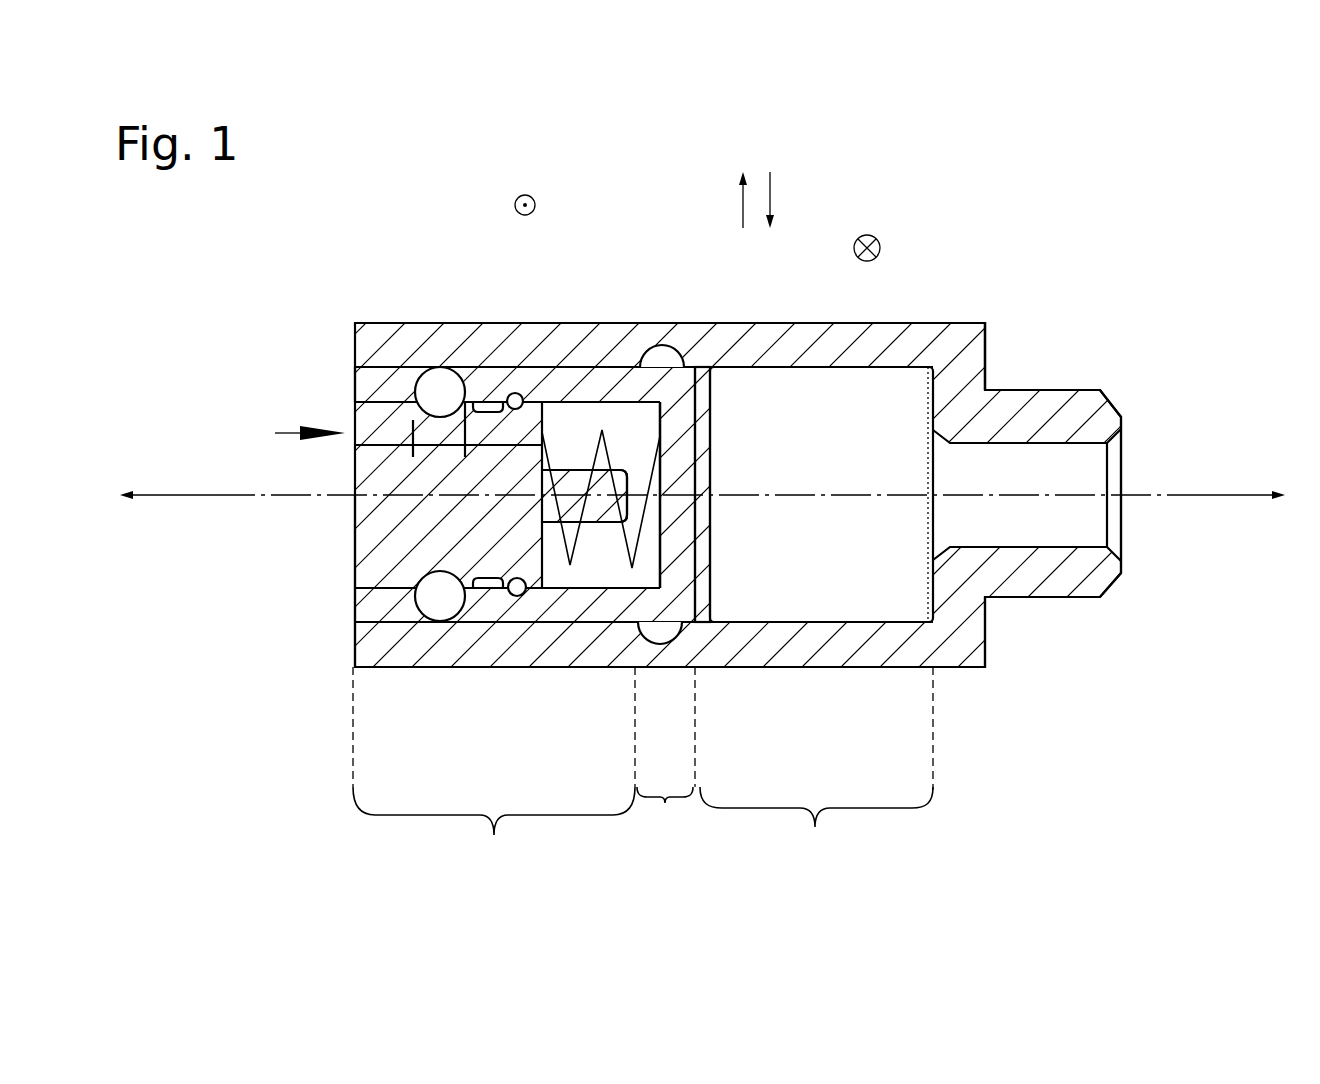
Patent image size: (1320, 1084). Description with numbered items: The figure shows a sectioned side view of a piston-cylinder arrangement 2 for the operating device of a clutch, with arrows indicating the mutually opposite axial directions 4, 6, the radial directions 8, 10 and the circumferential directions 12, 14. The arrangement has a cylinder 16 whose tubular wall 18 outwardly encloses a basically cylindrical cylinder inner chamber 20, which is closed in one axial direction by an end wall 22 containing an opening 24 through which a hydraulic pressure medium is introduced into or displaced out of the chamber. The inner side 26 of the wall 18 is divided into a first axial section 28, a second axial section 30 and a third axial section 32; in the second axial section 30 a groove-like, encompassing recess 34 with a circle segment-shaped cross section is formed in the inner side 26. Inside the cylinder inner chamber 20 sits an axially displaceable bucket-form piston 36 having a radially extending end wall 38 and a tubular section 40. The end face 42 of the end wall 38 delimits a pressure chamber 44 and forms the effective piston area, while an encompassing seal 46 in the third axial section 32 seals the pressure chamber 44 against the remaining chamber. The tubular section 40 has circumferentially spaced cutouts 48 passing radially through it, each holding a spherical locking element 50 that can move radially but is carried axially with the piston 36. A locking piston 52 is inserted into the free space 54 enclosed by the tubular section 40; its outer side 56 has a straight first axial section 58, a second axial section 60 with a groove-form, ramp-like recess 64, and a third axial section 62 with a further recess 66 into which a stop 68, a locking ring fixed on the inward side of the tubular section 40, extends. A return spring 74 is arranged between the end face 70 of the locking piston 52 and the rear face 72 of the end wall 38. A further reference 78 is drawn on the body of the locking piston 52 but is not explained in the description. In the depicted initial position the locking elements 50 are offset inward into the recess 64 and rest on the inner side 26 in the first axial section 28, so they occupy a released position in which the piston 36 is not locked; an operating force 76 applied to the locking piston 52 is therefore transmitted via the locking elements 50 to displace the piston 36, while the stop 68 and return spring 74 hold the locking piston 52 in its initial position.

The piston-cylinder arrangement 2 is at (1146, 343).
The axial direction 4 is at (1235, 495).
The axial direction 6 is at (187, 495).
The radial direction 8 is at (743, 210).
The radial direction 10 is at (770, 190).
The circumferential direction 12 is at (534, 198).
The circumferential direction 14 is at (878, 237).
The cylinder 16 is at (960, 316).
The wall 18 is at (868, 345).
The cylinder inner chamber 20 is at (882, 592).
The end wall 22 is at (955, 411).
The opening 24 is at (1056, 472).
The inner side 26 is at (764, 378).
The first axial section 28 is at (494, 772).
The second axial section 30 is at (666, 753).
The third axial section 32 is at (816, 767).
The recess 34 is at (663, 366).
The piston 36 is at (533, 632).
The end wall 38 is at (685, 467).
The tubular section 40 is at (590, 608).
The end face 42 is at (706, 462).
The pressure chamber 44 is at (872, 447).
The seal 46 is at (704, 622).
The cutouts 48 is at (465, 360).
The locking element 50 is at (440, 392).
The locking piston 52 is at (346, 586).
The free space 54 is at (590, 441).
The outer side 56 is at (382, 390).
The first axial section 58 is at (402, 470).
The second axial section 60 is at (450, 475).
The third axial section 62 is at (500, 476).
The recess 64 is at (420, 573).
The recess 66 is at (497, 401).
The stop 68 is at (516, 401).
The end face 70 is at (555, 558).
The rear face 72 is at (648, 433).
The return spring 74 is at (660, 625).
The operating force 76 is at (275, 432).
The piston body 78 is at (522, 488).